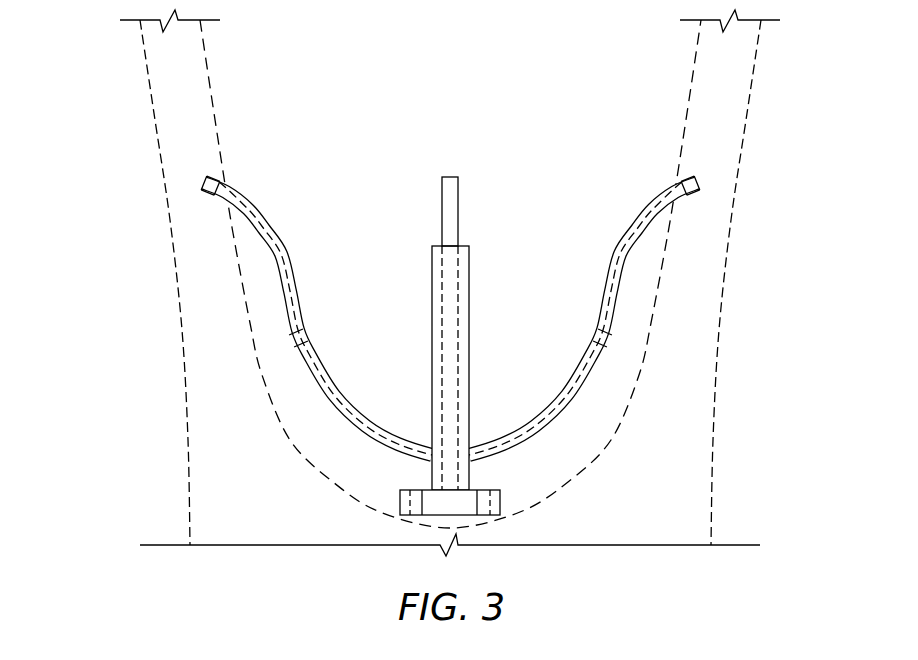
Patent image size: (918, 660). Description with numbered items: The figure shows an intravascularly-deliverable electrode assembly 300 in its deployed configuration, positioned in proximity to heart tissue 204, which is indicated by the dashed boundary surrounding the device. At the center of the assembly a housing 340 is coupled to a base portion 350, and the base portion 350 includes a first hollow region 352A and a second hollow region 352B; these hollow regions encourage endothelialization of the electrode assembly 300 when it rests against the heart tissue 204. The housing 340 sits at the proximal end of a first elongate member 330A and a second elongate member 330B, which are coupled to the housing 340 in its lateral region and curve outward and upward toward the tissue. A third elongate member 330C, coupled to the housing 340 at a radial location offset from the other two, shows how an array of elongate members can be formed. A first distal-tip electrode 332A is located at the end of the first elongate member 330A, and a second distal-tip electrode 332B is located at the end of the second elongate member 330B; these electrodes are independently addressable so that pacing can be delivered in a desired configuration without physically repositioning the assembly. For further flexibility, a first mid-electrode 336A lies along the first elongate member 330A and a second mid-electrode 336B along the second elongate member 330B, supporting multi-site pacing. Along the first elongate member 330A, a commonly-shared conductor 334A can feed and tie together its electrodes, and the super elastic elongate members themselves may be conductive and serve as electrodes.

The intravascularly-deliverable electrode assembly 300 is at (374, 303).
The heart tissue 204 is at (705, 270).
The first elongate member 330A is at (584, 304).
The second elongate member 330B is at (316, 307).
The third elongate member 330C is at (459, 212).
The first distal-tip electrode 332A is at (685, 178).
The second distal-tip electrode 332B is at (216, 178).
The commonly-shared conductor 334A is at (622, 298).
The first mid-electrode 336A is at (598, 340).
The second mid-electrode 336B is at (304, 340).
The housing 340 is at (481, 333).
The base portion 350 is at (450, 498).
The first hollow region 352A is at (490, 508).
The second hollow region 352B is at (410, 508).